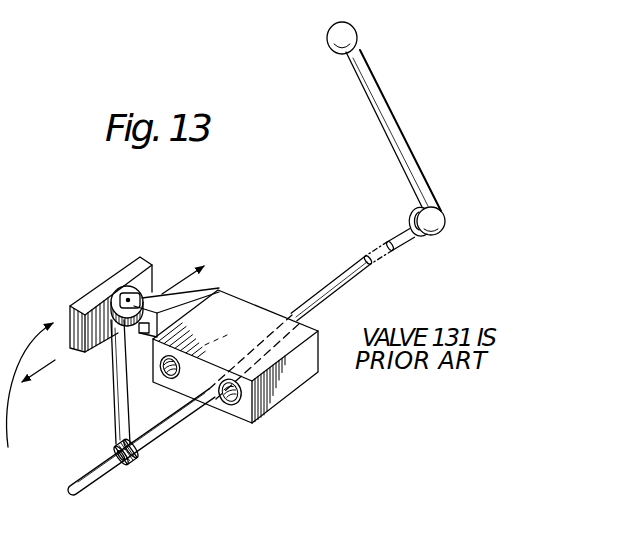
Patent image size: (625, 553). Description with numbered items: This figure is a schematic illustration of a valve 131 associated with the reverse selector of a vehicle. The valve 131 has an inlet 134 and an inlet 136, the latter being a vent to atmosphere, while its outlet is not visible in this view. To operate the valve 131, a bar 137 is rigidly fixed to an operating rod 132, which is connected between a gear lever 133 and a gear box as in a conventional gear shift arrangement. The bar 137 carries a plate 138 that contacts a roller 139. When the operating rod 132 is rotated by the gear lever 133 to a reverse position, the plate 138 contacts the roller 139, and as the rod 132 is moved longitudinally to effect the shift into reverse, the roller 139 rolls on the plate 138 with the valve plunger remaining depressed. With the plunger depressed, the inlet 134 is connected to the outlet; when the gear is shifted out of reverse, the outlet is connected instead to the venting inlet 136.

The valve 131 is at (288, 383).
The operating rod 132 is at (342, 284).
The gear lever 133 is at (418, 163).
The inlet 134 is at (226, 404).
The inlet 136 is at (166, 380).
The bar 137 is at (112, 399).
The plate 138 is at (122, 272).
The roller 139 is at (153, 292).